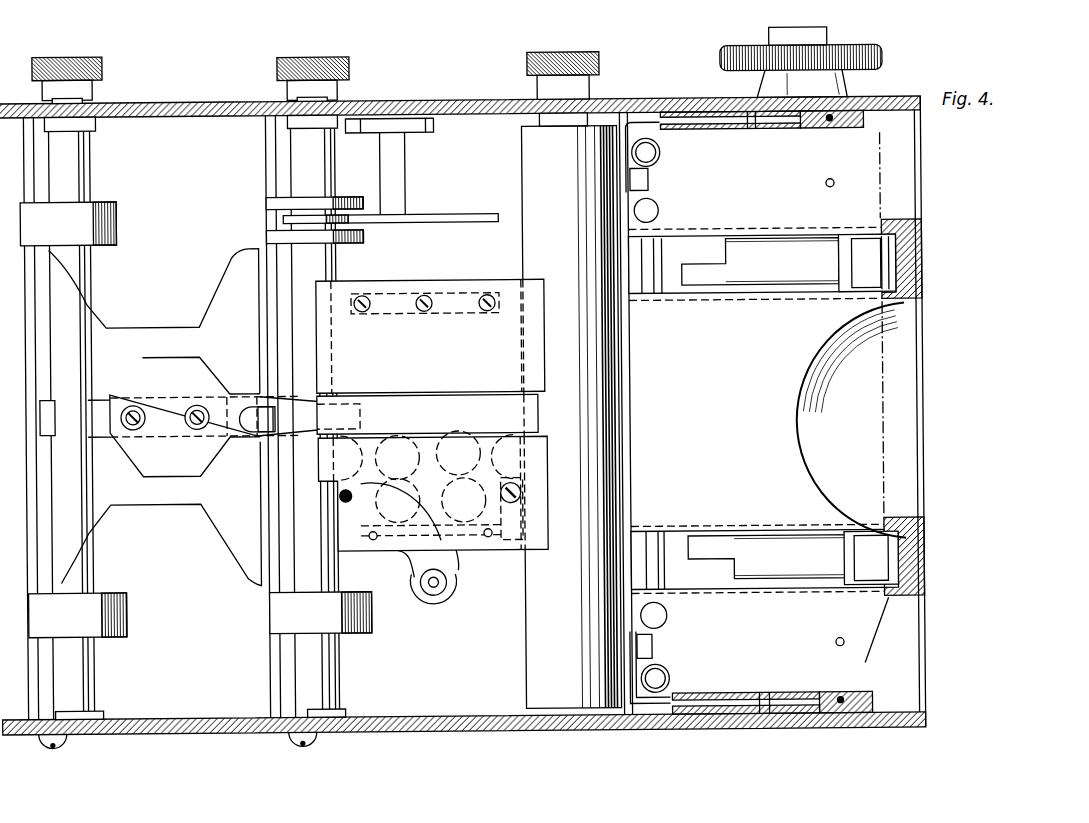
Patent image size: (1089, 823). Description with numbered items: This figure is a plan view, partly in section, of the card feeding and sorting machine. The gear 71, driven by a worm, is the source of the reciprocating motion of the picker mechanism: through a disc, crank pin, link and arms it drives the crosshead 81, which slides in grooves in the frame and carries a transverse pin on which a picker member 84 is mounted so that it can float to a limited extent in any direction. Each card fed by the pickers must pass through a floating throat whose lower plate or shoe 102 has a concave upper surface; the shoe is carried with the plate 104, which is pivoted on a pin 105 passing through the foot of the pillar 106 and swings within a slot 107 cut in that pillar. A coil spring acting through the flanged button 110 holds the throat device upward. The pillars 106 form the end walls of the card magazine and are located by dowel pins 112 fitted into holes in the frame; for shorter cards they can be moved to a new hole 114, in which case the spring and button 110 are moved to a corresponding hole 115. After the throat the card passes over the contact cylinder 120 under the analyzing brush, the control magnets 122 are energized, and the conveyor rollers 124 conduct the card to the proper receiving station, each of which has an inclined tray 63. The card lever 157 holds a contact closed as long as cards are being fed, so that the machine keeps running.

The gear 71 is at (863, 51).
The card lever 157 is at (427, 220).
The flanged button 110 is at (662, 154).
The plate 104 is at (712, 131).
The pin 105 is at (753, 134).
The slot 107 is at (807, 135).
The pillar 106 is at (857, 134).
The conveyor rollers 124 is at (112, 614).
The picker member 84 is at (857, 262).
The crosshead 81 is at (757, 275).
The inclined tray 63 is at (200, 492).
The control magnets 122 is at (463, 508).
The contact cylinder 120 is at (545, 612).
The hole 115 is at (660, 207).
The shoe 102 is at (650, 645).
The hole 114 is at (842, 642).
The dowel pin 112 is at (838, 695).